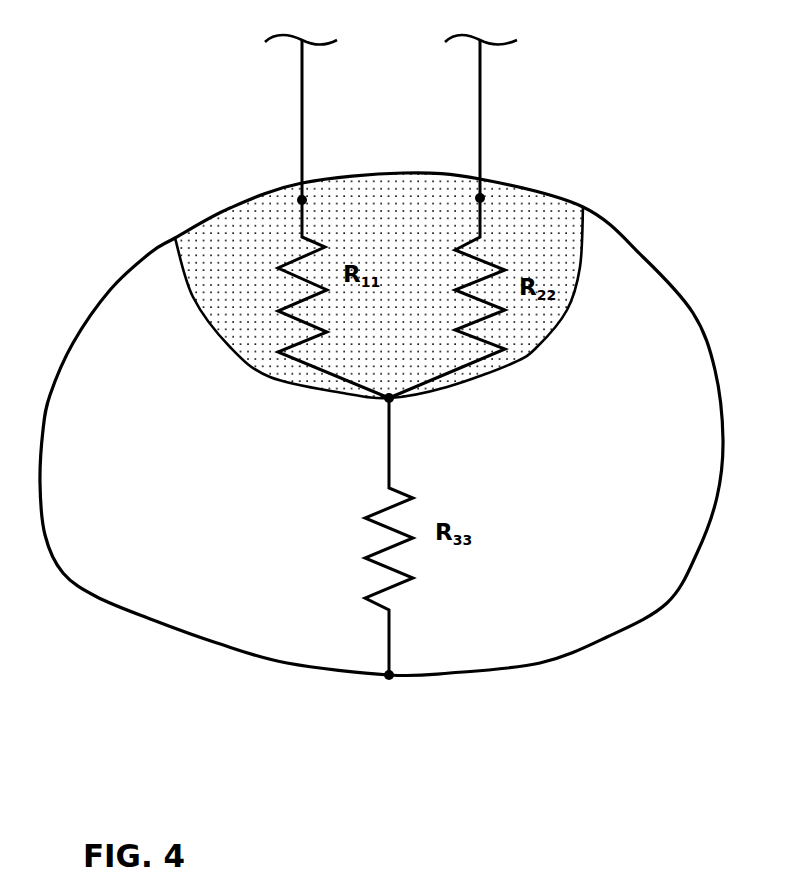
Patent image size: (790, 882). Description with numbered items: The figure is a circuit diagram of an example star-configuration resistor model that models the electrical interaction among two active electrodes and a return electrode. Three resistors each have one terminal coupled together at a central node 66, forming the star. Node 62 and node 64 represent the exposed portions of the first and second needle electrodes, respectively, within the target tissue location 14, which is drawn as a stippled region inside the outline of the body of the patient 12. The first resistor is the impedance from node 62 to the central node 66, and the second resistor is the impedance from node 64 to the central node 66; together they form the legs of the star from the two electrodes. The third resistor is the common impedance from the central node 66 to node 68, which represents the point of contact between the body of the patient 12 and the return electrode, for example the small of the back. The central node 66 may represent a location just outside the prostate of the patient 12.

The patient 12 is at (165, 588).
The target tissue location 14 is at (207, 273).
The node 62 is at (298, 198).
The node 64 is at (484, 196).
The central node 66 is at (392, 402).
The node 68 is at (398, 673).